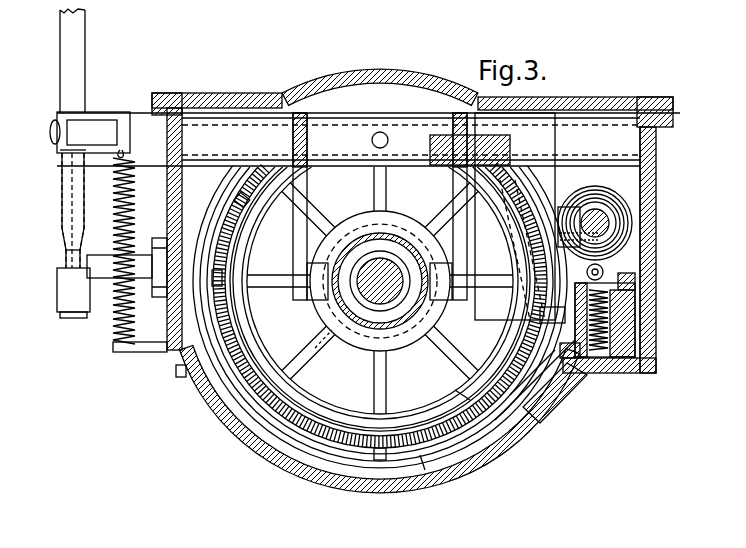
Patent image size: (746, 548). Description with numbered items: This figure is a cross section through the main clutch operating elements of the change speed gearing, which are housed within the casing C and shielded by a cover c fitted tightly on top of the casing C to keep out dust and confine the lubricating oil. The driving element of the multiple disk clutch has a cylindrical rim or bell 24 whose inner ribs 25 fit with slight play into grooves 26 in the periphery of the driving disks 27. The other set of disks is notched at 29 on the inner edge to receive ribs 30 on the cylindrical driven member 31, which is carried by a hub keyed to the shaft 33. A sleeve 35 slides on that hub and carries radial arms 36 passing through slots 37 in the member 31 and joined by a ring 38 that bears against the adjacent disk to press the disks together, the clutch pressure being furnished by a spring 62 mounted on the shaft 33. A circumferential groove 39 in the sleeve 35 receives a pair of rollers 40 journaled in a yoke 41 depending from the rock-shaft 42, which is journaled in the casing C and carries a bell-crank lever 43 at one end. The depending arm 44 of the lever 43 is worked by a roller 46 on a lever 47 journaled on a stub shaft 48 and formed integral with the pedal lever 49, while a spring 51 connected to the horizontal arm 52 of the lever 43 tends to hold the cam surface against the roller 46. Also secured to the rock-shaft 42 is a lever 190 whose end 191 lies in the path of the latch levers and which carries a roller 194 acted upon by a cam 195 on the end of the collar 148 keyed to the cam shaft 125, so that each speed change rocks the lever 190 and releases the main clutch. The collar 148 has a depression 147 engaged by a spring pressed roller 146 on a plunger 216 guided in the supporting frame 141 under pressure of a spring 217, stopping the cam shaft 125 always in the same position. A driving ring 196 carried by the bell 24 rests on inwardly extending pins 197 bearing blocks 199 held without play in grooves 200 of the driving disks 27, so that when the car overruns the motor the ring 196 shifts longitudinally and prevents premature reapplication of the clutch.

The cover c is at (588, 100).
The rock-shaft 42 is at (215, 135).
The pins 197 is at (194, 168).
The grooves 26 is at (270, 427).
The ribs 25 is at (213, 276).
The disks 27 is at (322, 455).
The grooves 200 is at (350, 455).
The blocks 199 is at (236, 198).
The ring 38 is at (412, 458).
The notches 29 is at (395, 360).
The cylindrical driven member 31 is at (462, 385).
The ribs 30 is at (505, 282).
The slots 37 is at (278, 283).
The sleeve 35 is at (394, 189).
The radial arms 36 is at (346, 196).
The circumferential groove 39 is at (345, 332).
The shaft 33 is at (388, 296).
The spring 62 is at (357, 250).
The rollers 40 is at (313, 295).
The yoke 41 is at (455, 211).
The lever 190 is at (555, 194).
The pedal lever 49 is at (85, 76).
The horizontal arm 52 is at (106, 126).
The bell-crank lever 43 is at (63, 181).
The depending arm 44 is at (63, 209).
The lever 47 is at (62, 256).
The roller 46 is at (66, 314).
The stub shaft 48 is at (103, 270).
The spring 51 is at (136, 197).
The bell 24 is at (230, 390).
The roller 194 is at (578, 247).
The cam 195 is at (627, 203).
The collar 148 is at (620, 207).
The cam shaft 125 is at (598, 222).
The depression 147 is at (650, 238).
The spring pressed roller 146 is at (603, 272).
The plunger 216 is at (636, 283).
The supporting frame 141 is at (622, 315).
The spring 217 is at (606, 330).
The end 191 is at (586, 362).
The driving ring 196 is at (505, 415).
The casing C is at (548, 412).